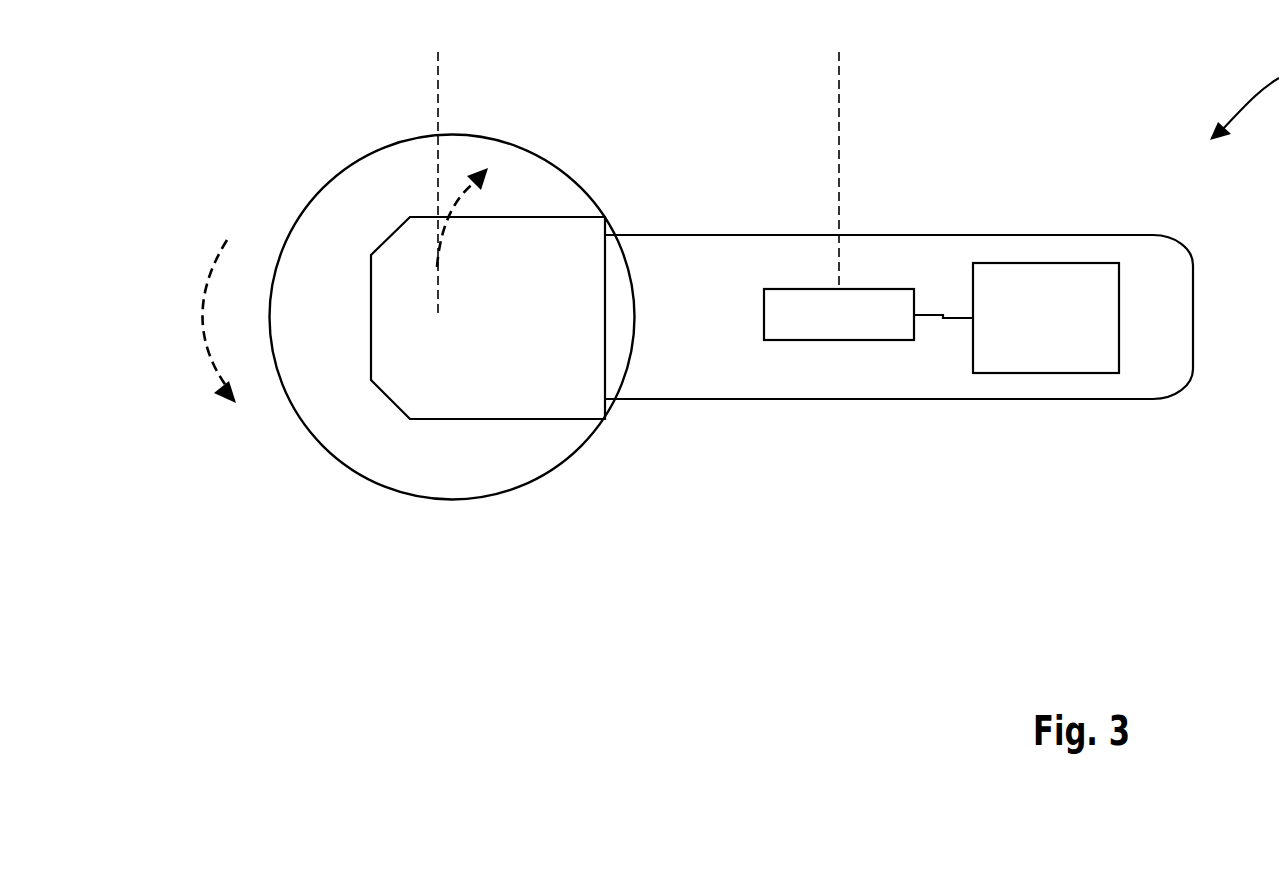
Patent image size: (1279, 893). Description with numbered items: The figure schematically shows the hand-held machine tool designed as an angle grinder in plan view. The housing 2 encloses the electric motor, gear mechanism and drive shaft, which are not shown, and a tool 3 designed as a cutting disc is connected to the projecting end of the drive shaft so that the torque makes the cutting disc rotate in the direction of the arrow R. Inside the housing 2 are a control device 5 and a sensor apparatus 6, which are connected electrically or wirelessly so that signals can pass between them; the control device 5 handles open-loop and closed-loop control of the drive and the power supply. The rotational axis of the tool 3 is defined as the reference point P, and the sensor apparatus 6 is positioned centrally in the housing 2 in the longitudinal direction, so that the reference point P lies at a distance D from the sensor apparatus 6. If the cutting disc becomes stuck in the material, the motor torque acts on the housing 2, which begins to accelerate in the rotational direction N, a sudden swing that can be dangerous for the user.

The housing 2 is at (660, 363).
The tool 3 is at (393, 463).
The control device 5 is at (1050, 345).
The sensor apparatus 6 is at (821, 328).
The distance D is at (839, 52).
The rotational direction N is at (460, 192).
The reference point P is at (438, 317).
The arrow R is at (203, 317).